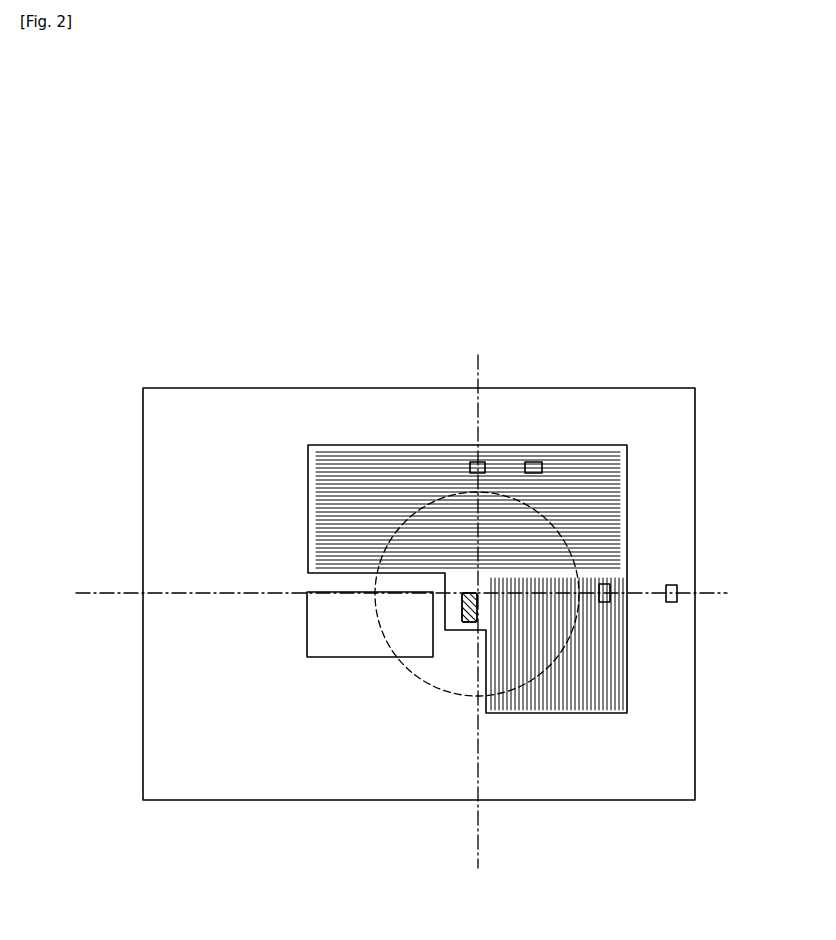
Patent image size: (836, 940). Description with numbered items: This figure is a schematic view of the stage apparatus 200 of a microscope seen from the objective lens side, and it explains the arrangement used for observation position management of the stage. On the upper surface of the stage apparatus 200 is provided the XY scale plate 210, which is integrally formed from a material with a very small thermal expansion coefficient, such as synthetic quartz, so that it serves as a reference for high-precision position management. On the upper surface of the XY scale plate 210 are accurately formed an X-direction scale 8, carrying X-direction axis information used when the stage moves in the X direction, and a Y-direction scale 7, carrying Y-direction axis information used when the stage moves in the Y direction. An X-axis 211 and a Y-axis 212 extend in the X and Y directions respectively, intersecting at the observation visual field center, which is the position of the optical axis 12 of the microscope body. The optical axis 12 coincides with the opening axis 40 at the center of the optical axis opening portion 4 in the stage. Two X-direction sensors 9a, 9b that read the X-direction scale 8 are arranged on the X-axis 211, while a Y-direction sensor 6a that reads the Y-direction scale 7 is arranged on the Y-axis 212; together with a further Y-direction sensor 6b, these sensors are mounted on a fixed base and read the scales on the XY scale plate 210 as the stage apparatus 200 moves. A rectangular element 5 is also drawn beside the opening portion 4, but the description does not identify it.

The stage apparatus 200 is at (203, 388).
The XY scale plate 210 is at (602, 445).
The Y-direction scale 7 is at (340, 465).
The X-direction scale 8 is at (603, 682).
The pad 5 is at (327, 657).
The optical axis opening portion 4 is at (438, 688).
The optical axis 12 is at (478, 593).
The opening axis 40 is at (469, 607).
The Y-direction sensor 6a is at (479, 462).
The Y-direction sensor 6b is at (534, 462).
The X-direction sensor 9a is at (604, 585).
The X-direction sensor 9b is at (674, 585).
The Y-axis 212 is at (476, 360).
The X-axis 211 is at (108, 593).